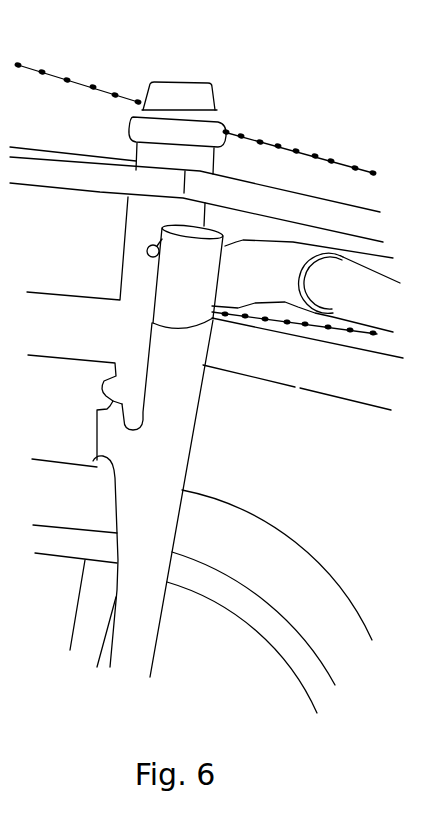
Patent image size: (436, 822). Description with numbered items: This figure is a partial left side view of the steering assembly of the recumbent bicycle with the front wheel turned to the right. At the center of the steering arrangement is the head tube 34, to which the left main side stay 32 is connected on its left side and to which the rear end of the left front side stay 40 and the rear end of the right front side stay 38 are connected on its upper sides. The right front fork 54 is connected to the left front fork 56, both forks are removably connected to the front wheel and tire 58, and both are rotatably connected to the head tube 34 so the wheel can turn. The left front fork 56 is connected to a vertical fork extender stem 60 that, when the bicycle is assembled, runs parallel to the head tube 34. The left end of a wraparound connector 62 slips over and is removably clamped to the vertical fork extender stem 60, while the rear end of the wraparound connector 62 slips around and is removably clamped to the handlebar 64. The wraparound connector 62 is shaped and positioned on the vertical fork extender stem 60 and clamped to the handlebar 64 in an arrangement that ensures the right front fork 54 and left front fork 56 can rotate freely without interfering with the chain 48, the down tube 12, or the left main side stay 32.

The down tube 12 is at (341, 402).
The left main side stay 32 is at (255, 180).
The head tube 34 is at (125, 217).
The right front side stay 38 is at (25, 147).
The left front side stay 40 is at (43, 157).
The chain 48 is at (305, 148).
The right front fork 54 is at (75, 605).
The left front fork 56 is at (158, 643).
The front wheel and tire 58 is at (285, 543).
The vertical fork extender stem 60 is at (177, 395).
The wraparound connector 62 is at (188, 288).
The handlebar 64 is at (377, 270).